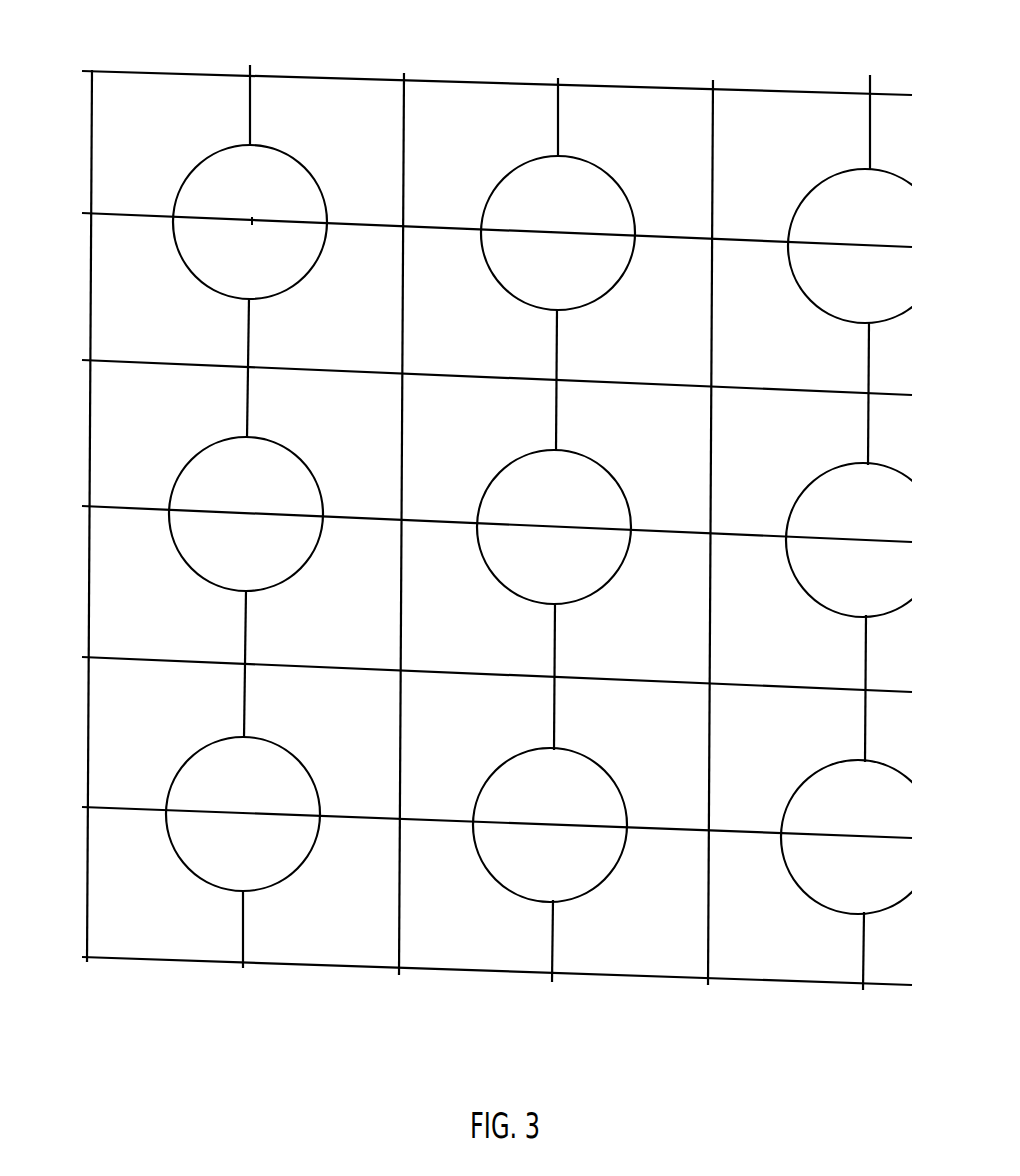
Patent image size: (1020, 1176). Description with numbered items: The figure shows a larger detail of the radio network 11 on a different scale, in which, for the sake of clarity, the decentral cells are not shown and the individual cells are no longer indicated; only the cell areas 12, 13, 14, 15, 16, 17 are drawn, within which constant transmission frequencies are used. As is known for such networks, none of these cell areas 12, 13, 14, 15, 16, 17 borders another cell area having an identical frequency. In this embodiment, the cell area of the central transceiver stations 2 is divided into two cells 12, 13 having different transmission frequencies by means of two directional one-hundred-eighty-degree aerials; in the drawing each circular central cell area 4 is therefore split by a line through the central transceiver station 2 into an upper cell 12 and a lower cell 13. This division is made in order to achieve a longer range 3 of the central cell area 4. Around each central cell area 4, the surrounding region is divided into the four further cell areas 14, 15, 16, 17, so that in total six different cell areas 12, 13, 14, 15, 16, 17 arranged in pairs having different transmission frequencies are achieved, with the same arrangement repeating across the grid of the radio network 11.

The central transceiver station 2 is at (308, 199).
The range 3 is at (268, 148).
The central cell area 4 is at (188, 198).
The radio network 11 is at (470, 80).
The cell area 12 is at (238, 204).
The cell area 13 is at (238, 274).
The cell area 14 is at (145, 137).
The cell area 15 is at (320, 141).
The cell area 16 is at (138, 336).
The cell area 17 is at (320, 341).